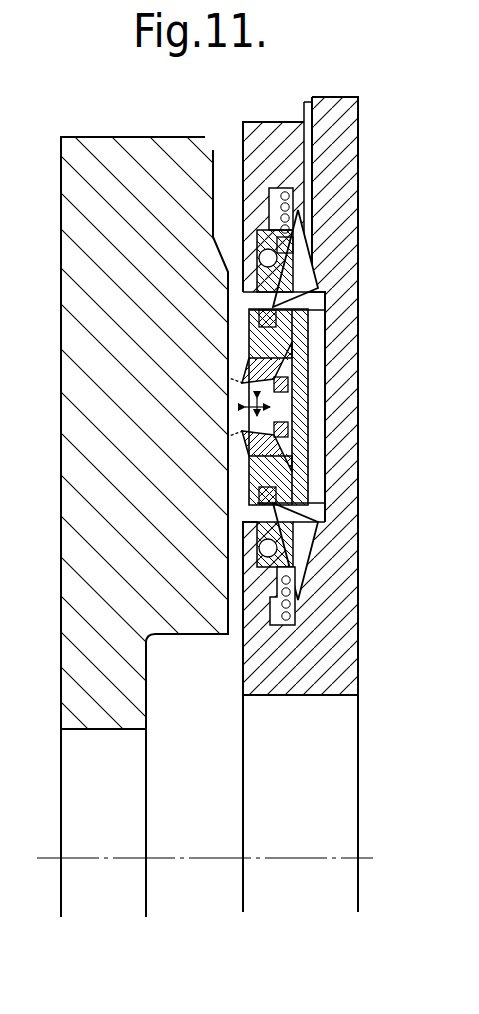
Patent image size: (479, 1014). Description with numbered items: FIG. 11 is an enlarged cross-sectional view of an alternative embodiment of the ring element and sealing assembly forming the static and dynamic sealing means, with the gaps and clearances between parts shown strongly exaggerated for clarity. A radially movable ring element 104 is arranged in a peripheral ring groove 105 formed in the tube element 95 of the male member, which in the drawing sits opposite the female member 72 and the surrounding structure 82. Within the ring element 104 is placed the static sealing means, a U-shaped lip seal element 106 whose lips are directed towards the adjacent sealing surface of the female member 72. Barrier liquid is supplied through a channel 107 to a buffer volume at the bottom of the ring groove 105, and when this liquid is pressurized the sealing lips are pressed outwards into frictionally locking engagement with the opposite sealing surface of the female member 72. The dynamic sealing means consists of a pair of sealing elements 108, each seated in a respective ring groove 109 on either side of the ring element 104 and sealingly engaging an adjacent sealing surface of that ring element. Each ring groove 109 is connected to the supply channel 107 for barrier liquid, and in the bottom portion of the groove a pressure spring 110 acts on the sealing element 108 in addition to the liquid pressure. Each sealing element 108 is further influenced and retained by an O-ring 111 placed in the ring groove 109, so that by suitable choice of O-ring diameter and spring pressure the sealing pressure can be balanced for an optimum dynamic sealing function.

The female member 72 is at (58, 433).
The outer housing wall 82 is at (365, 455).
The tube element 95 is at (335, 645).
The ring element 104 is at (310, 342).
The ring groove 105 is at (310, 513).
The U-shaped lip seal element 106 is at (286, 380).
The channel 107 is at (310, 182).
The sealing element 108 is at (300, 278).
The ring groove 109 is at (262, 227).
The pressure spring 110 is at (290, 598).
The O-ring 111 is at (279, 256).